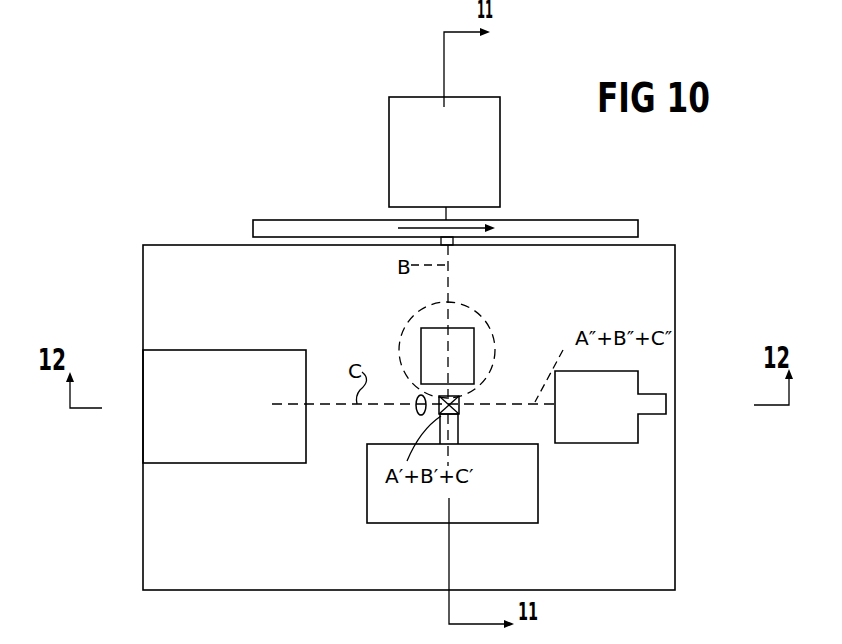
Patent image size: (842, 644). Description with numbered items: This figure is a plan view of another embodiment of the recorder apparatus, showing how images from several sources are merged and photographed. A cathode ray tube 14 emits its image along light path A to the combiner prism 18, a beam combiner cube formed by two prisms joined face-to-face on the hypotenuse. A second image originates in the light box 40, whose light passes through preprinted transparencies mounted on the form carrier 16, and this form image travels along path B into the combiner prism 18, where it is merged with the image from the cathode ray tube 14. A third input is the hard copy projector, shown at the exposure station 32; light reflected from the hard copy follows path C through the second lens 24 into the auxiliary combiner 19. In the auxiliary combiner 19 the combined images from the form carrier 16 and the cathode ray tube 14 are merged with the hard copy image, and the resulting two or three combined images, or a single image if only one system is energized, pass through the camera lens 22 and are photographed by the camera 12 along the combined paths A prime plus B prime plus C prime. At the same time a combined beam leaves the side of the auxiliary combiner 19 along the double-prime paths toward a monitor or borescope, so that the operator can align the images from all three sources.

The light box 40 is at (497, 146).
The form carrier 16 is at (610, 220).
The exposure station 32 is at (248, 350).
The CRT 14 is at (410, 322).
The combiner prism 18 is at (468, 328).
The auxiliary combiner 19 is at (460, 398).
The camera lens 22 is at (462, 430).
The second lens 24 is at (415, 409).
The camera 12 is at (533, 523).